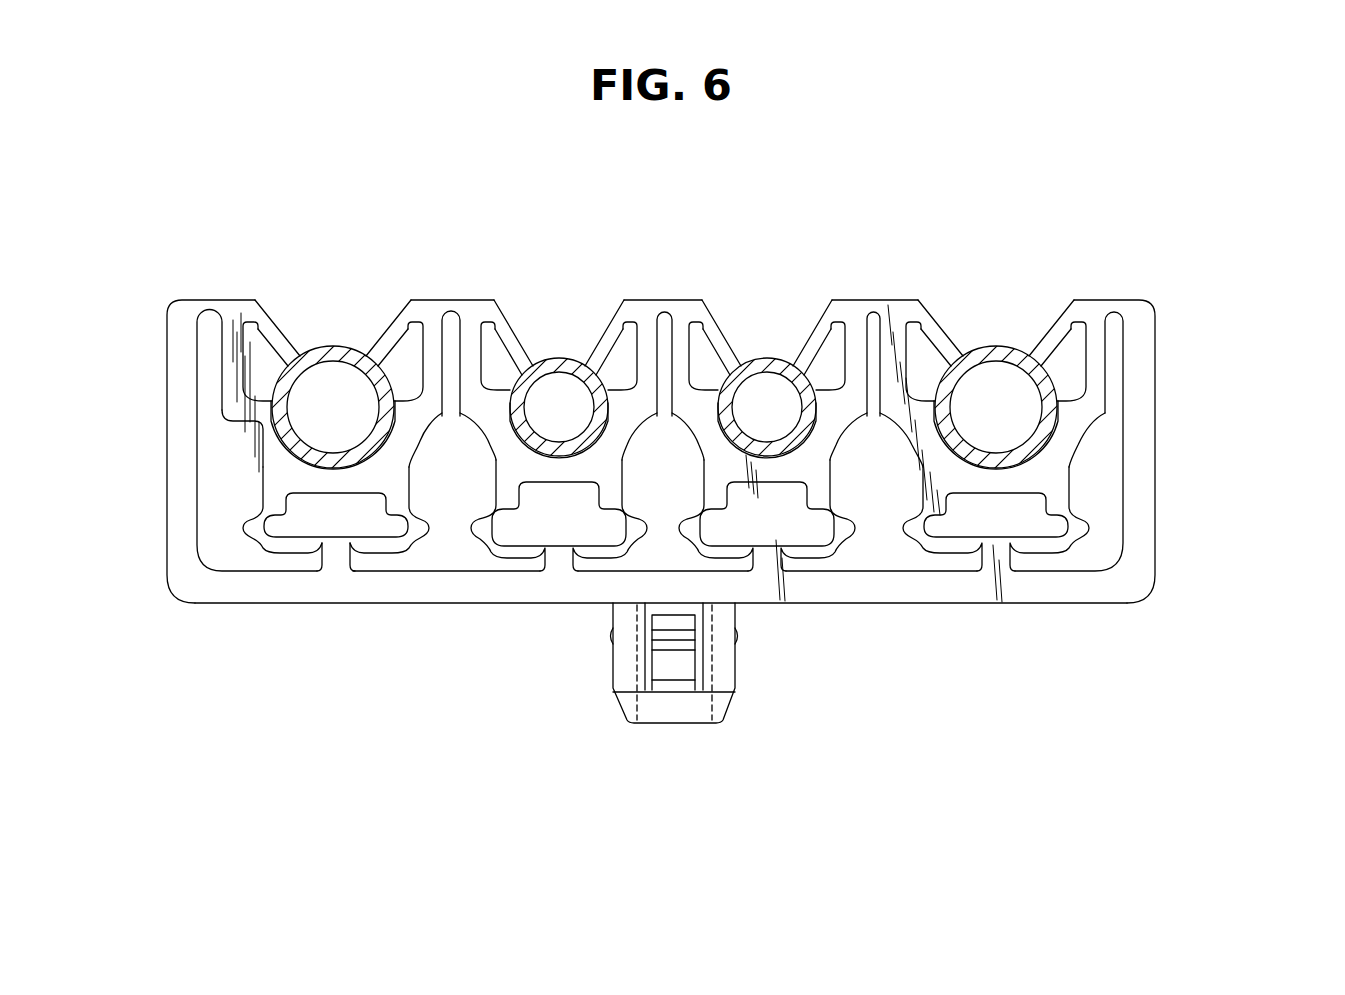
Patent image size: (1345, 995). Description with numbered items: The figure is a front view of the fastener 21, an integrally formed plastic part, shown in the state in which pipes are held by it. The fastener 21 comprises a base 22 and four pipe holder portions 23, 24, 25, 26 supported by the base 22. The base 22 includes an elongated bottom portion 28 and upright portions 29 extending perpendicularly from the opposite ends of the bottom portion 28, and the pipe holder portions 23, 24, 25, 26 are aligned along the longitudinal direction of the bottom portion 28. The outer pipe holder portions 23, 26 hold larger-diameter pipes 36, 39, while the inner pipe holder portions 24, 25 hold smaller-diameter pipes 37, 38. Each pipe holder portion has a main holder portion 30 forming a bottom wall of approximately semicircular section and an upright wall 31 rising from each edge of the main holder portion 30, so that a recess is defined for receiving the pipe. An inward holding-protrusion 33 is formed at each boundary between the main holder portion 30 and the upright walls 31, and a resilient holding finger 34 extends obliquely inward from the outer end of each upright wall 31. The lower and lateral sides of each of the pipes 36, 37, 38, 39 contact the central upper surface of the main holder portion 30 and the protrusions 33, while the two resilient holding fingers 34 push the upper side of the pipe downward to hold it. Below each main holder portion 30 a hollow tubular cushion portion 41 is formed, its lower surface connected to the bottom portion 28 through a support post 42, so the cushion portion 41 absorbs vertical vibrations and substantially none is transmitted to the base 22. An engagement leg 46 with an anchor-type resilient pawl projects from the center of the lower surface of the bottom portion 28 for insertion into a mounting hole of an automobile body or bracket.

The fastener 21 is at (1198, 258).
The base 22 is at (1243, 505).
The pipe holder portion 23 is at (257, 424).
The pipe holder portion 24 is at (533, 376).
The pipe holder portion 25 is at (742, 376).
The pipe holder portion 26 is at (965, 376).
The bottom portion 28 is at (485, 603).
The upright portion 29 is at (1133, 530).
The main holder portion 30 is at (260, 473).
The upright wall 31 is at (230, 353).
The holding-protrusion 33 is at (234, 435).
The resilient holding finger 34 is at (333, 296).
The pipe 36 is at (293, 367).
The pipe 37 is at (529, 377).
The pipe 38 is at (737, 377).
The pipe 39 is at (956, 367).
The hollow tubular cushion portion 41 is at (336, 583).
The support post 42 is at (352, 609).
The engagement leg 46 is at (718, 685).